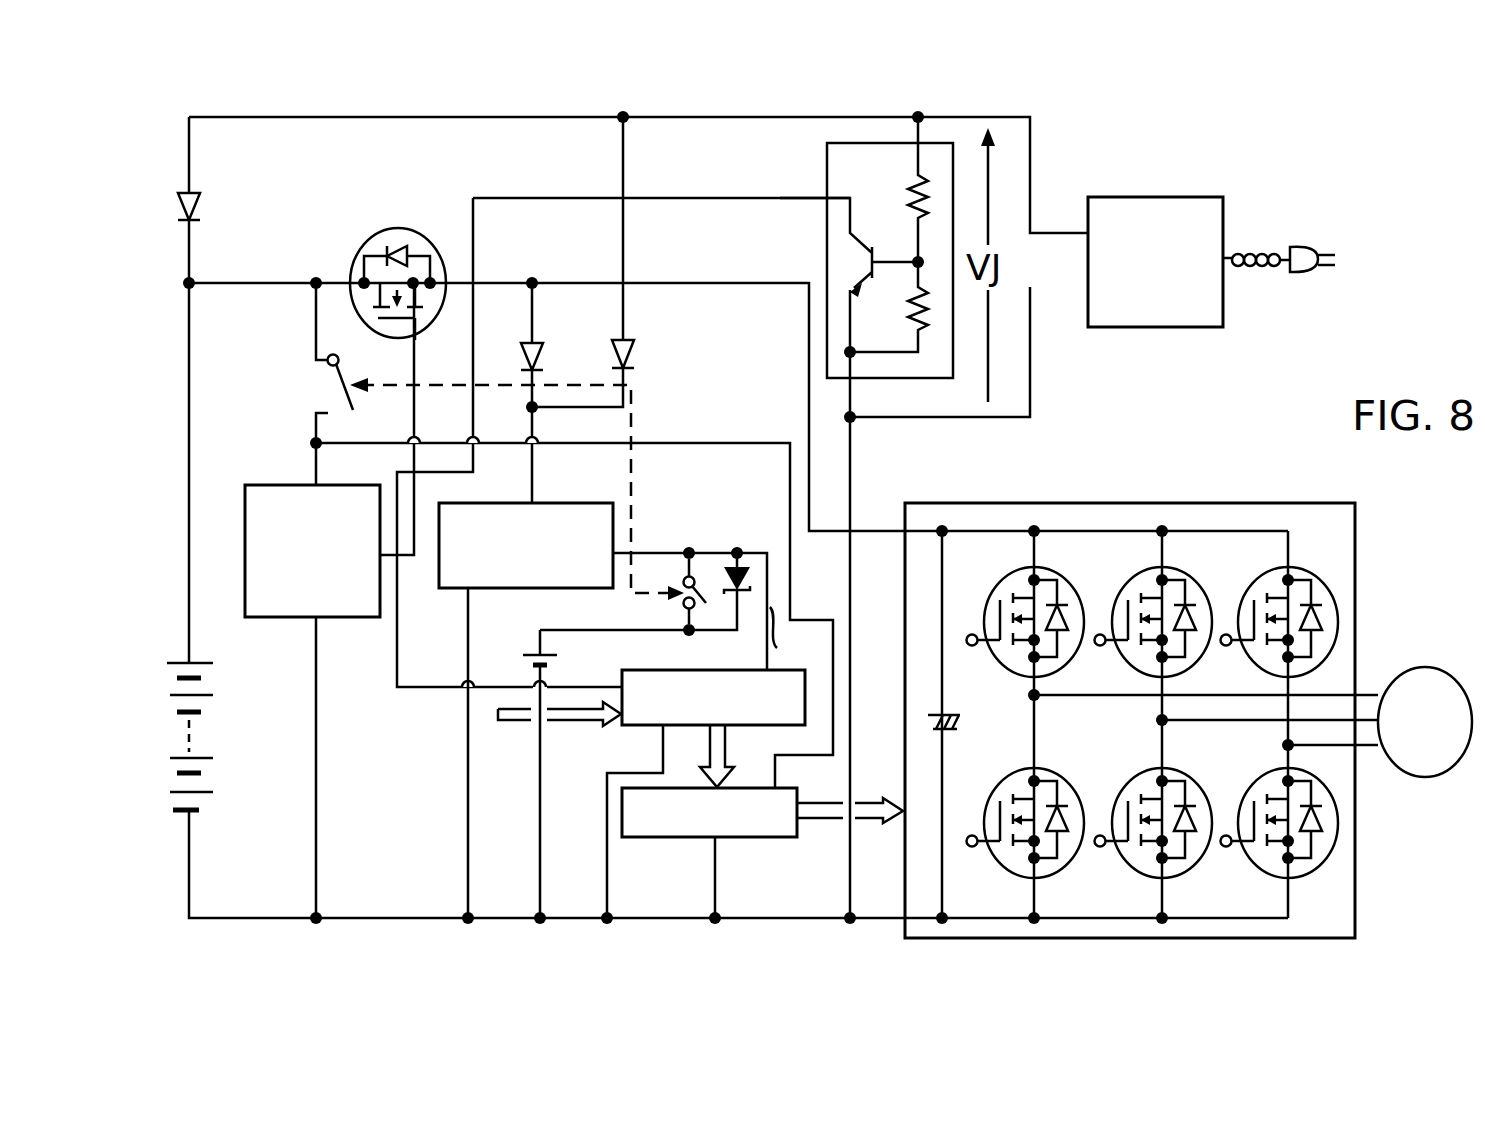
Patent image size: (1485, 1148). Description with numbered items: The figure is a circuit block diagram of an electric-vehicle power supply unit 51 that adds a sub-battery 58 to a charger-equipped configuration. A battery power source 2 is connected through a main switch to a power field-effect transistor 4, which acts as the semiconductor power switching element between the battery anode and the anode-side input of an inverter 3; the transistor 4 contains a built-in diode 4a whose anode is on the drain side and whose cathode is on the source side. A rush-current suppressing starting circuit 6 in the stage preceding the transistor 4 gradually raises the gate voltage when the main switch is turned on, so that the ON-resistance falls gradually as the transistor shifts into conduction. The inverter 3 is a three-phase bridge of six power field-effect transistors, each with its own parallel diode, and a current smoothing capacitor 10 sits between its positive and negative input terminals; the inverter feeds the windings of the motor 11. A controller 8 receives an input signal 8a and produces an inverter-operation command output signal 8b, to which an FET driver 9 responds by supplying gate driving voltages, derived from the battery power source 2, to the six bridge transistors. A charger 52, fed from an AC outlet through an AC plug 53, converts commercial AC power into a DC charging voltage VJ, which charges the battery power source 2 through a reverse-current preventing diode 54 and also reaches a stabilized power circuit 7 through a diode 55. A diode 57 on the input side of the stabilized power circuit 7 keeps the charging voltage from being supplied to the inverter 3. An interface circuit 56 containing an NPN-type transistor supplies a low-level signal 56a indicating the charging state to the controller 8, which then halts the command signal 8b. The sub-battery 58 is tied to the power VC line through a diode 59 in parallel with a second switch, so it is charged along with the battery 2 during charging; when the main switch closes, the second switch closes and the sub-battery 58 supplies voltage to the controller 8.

The battery power source 2 is at (208, 738).
The inverter 3 is at (1110, 502).
The power field-effect transistor 4 is at (375, 250).
The diode 4a is at (400, 244).
The rush-current suppressing starting circuit 6 is at (280, 485).
The stabilized power circuit 7 is at (440, 567).
The controller 8 is at (737, 668).
The controller input signal 8a is at (497, 714).
The inverter-operation command output signal 8b is at (707, 748).
The FET driver 9 is at (786, 838).
The current smoothing capacitor 10 is at (957, 725).
The motor 11 is at (1408, 778).
The electric-vehicle power supply unit 51 is at (323, 388).
The charger 52 is at (1225, 297).
The AC plug 53 is at (1300, 247).
The reverse-current preventing diode 54 is at (203, 206).
The diode 55 is at (630, 360).
The interface circuit 56 is at (827, 170).
The L level signal 56a is at (775, 198).
The diode 57 is at (545, 352).
The sub-battery 58 is at (380, 730).
The diode 59 is at (748, 563).